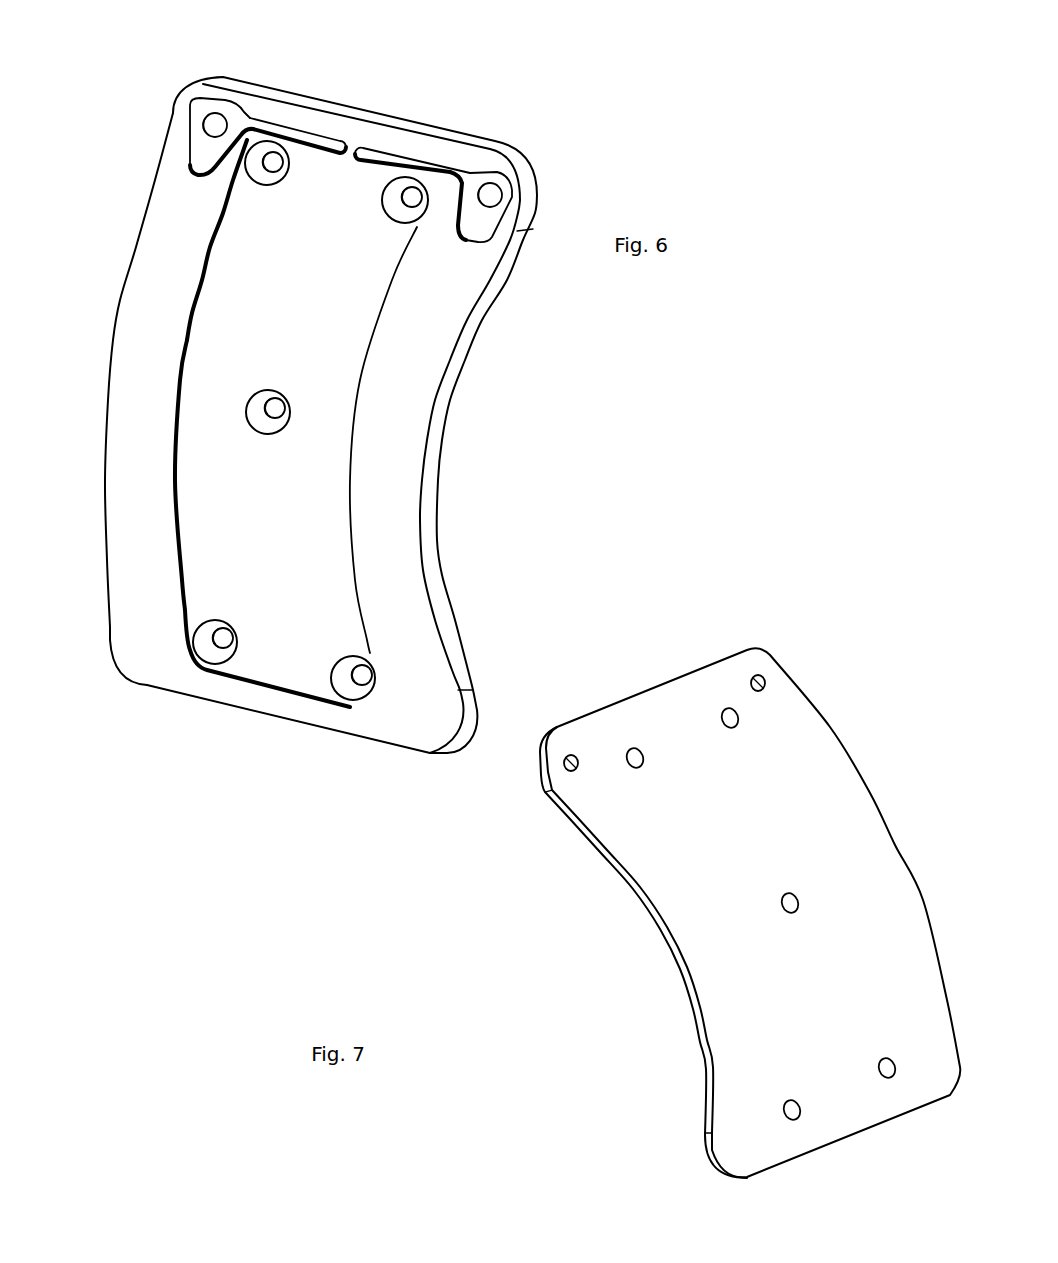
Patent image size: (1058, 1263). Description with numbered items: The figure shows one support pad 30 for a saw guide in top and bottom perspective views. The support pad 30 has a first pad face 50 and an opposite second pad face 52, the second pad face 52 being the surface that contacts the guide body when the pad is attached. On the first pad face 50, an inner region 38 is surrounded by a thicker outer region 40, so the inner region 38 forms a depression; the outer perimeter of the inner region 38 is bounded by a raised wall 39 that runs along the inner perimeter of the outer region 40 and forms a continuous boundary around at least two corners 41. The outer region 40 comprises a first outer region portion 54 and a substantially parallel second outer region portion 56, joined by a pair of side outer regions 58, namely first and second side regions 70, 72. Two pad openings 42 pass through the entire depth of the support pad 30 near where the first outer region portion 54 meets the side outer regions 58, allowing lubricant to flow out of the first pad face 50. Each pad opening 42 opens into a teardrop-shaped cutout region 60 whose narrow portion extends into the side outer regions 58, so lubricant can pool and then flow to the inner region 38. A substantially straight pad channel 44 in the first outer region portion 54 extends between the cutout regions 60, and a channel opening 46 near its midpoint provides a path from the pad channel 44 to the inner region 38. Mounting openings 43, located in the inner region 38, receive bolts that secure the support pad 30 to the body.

In FIG. 6, the support pad 30 is at (473, 355).
In FIG. 7, the support pad 30 is at (838, 728).
In FIG. 6, the inner region 38 is at (200, 470).
In FIG. 6, the raised wall 39 is at (207, 253).
In FIG. 6, the outer region 40 is at (367, 442).
In FIG. 6, the corners 41 is at (261, 158).
In FIG. 6, the pad openings 42 is at (223, 120).
In FIG. 7, the pad openings 42 is at (564, 764).
In FIG. 6, the mounting openings 43 is at (275, 403).
In FIG. 7, the mounting openings 43 is at (790, 912).
In FIG. 6, the pad channel 44 is at (288, 127).
In FIG. 6, the channel opening 46 is at (353, 147).
In FIG. 6, the first pad face 50 is at (200, 392).
In FIG. 7, the second pad face 52 is at (680, 877).
In FIG. 6, the first outer region portion 54 is at (443, 150).
In FIG. 6, the second outer region portion 56 is at (257, 698).
In FIG. 6, the side outer regions 58 is at (150, 320).
In FIG. 6, the cutout region 60 is at (203, 148).
In FIG. 6, the first side region 70 is at (128, 478).
In FIG. 6, the second side region 72 is at (418, 628).